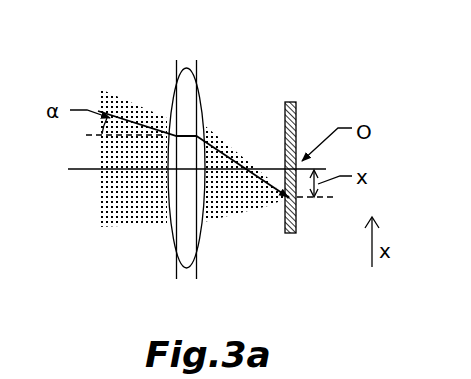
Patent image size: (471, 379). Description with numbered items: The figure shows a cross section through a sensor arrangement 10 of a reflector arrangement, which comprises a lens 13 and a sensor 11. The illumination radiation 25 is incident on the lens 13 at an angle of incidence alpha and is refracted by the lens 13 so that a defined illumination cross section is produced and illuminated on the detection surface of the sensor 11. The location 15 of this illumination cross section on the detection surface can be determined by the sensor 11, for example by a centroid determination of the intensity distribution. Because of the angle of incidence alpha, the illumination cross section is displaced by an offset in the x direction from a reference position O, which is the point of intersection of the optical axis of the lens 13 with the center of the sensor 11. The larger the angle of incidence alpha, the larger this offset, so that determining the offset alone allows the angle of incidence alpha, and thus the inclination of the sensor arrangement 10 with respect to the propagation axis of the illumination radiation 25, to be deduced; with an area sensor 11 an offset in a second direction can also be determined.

The sensor arrangement 10 is at (263, 44).
The sensor 11 is at (323, 155).
The lens 13 is at (157, 162).
The location of the illumination cross section 15 is at (255, 232).
The illumination radiation 25 is at (167, 157).